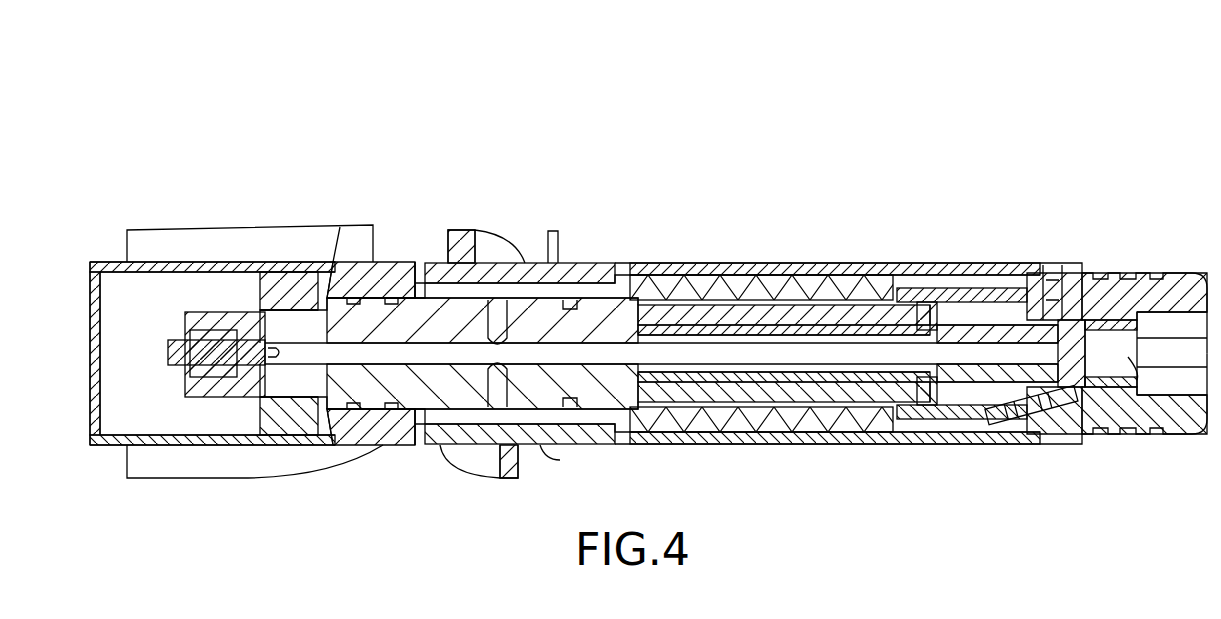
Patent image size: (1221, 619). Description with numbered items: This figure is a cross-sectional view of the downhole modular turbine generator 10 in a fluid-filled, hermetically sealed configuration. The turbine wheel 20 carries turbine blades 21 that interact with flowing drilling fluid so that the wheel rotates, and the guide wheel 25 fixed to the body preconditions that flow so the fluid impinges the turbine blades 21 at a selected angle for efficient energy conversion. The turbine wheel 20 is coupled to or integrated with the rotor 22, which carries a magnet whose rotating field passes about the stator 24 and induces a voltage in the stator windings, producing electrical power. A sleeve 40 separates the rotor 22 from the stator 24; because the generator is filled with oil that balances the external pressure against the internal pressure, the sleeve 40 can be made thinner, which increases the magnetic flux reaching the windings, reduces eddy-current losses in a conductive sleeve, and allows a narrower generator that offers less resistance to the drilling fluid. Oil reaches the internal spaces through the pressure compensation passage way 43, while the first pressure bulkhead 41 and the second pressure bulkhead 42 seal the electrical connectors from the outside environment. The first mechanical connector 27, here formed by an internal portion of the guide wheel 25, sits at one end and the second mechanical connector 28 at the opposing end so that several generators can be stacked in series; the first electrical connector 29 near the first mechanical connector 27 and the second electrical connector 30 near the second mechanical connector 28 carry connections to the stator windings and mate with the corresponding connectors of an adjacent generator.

The turbine generator 10 is at (512, 128).
The turbine wheel 20 is at (459, 236).
The turbine blades 21 is at (472, 460).
The rotor 22 is at (718, 285).
The stator 24 is at (812, 312).
The guide wheel 25 is at (323, 236).
The first mechanical connector 27 is at (115, 262).
The second mechanical connector 28 is at (1166, 275).
The first electrical connector 29 is at (168, 350).
The second electrical connector 30 is at (1128, 357).
The sleeve 40 is at (790, 407).
The first pressure bulkhead 41 is at (207, 373).
The second pressure bulkhead 42 is at (1068, 348).
The pressure compensation passage way 43 is at (1045, 412).